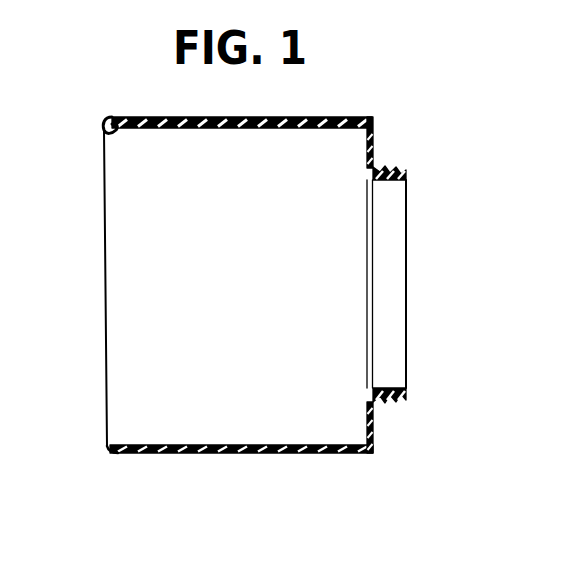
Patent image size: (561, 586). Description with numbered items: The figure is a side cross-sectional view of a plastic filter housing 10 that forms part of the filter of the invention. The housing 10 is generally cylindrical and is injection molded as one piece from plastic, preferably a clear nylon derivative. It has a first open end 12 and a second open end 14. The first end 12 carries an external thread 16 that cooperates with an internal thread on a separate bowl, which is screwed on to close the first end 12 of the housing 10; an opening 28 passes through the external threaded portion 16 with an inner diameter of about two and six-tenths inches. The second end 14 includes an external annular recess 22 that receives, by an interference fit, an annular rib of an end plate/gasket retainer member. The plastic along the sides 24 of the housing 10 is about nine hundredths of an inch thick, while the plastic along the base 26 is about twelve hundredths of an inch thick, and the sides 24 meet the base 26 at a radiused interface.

The housing 10 is at (78, 86).
The first open end 12 is at (403, 178).
The second open end 14 is at (104, 131).
The external thread 16 is at (392, 170).
The external annular recess 22 is at (118, 451).
The sides 24 is at (172, 455).
The base 26 is at (376, 422).
The opening 28 is at (392, 182).